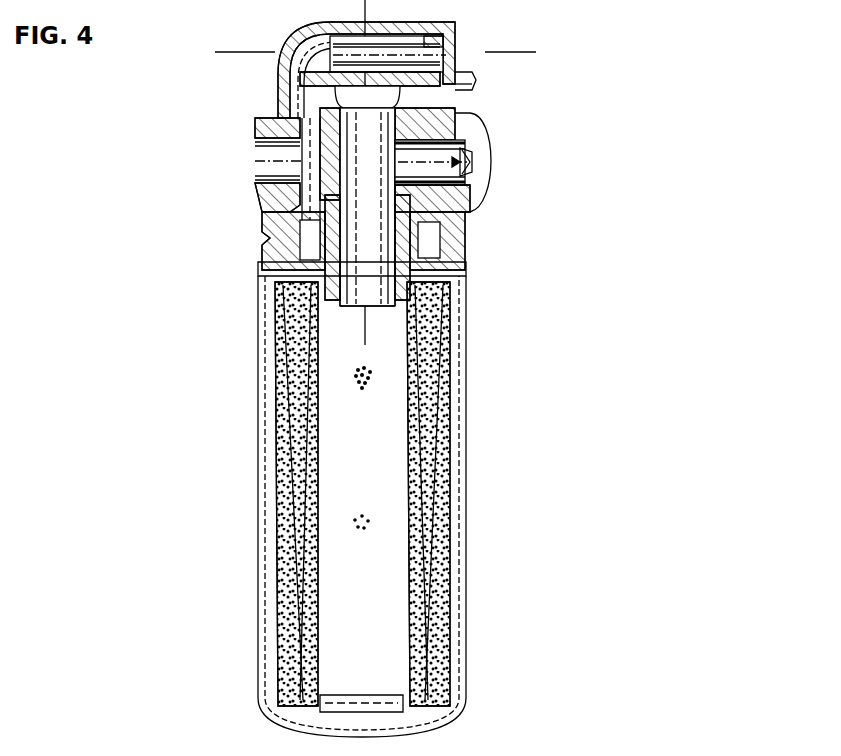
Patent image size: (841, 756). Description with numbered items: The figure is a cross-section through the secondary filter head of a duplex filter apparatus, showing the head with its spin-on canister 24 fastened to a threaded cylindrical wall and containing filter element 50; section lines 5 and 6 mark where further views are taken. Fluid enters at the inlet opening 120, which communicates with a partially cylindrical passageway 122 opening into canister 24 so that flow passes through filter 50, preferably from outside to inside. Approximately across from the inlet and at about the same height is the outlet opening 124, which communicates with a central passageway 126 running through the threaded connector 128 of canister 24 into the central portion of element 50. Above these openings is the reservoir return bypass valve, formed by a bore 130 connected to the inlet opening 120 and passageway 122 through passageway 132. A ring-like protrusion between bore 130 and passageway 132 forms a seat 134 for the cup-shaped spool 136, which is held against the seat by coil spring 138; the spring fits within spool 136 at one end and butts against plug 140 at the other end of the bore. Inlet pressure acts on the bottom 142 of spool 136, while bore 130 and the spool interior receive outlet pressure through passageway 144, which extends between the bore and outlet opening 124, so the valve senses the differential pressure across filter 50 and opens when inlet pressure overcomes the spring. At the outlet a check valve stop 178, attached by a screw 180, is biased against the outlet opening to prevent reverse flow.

The section line 5- 5 is at (228, 51).
The section line 6- 6 is at (364, 13).
The spin-on canister 24 is at (465, 392).
The filter element 50 is at (437, 450).
The inlet opening 120 is at (276, 158).
The partially cylindrical passageway 122 is at (310, 205).
The outlet opening 124 is at (430, 172).
The central passageway 126 is at (432, 216).
The threaded connector 128 is at (458, 268).
The bore 130 is at (424, 56).
The passageway 132 is at (298, 100).
The seat 134 is at (312, 62).
The spool 136 is at (350, 48).
The coil spring 138 is at (472, 78).
The plug 140 is at (462, 86).
The bottom of spool 142 is at (305, 84).
The passageway 144 is at (490, 134).
The stop 178 is at (437, 170).
The screw 180 is at (478, 158).